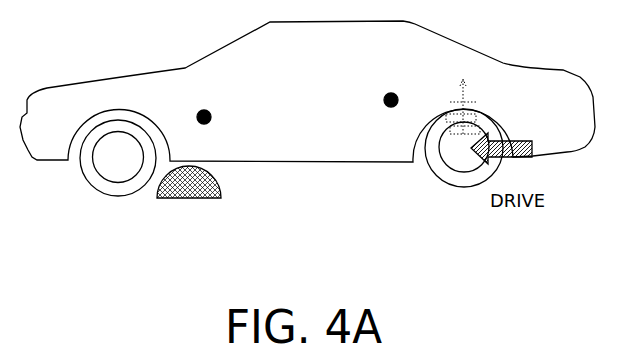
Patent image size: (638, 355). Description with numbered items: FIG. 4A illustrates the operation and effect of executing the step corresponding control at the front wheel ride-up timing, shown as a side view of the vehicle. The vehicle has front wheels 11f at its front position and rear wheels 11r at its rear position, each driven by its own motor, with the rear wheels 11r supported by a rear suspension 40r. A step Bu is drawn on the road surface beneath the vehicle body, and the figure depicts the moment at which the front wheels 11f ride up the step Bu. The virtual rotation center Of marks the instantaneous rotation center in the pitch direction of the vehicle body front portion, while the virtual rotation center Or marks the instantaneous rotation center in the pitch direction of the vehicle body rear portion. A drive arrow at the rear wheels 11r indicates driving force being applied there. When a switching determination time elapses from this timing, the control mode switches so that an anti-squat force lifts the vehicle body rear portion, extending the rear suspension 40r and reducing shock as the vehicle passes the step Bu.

The front wheels 11f is at (110, 196).
The rear wheels 11r is at (440, 165).
The step Bu is at (190, 200).
The rear suspension 40r is at (475, 102).
The virtual rotation center of vehicle body front portion Of is at (117, 117).
The virtual rotation center of vehicle body rear portion Or is at (466, 145).